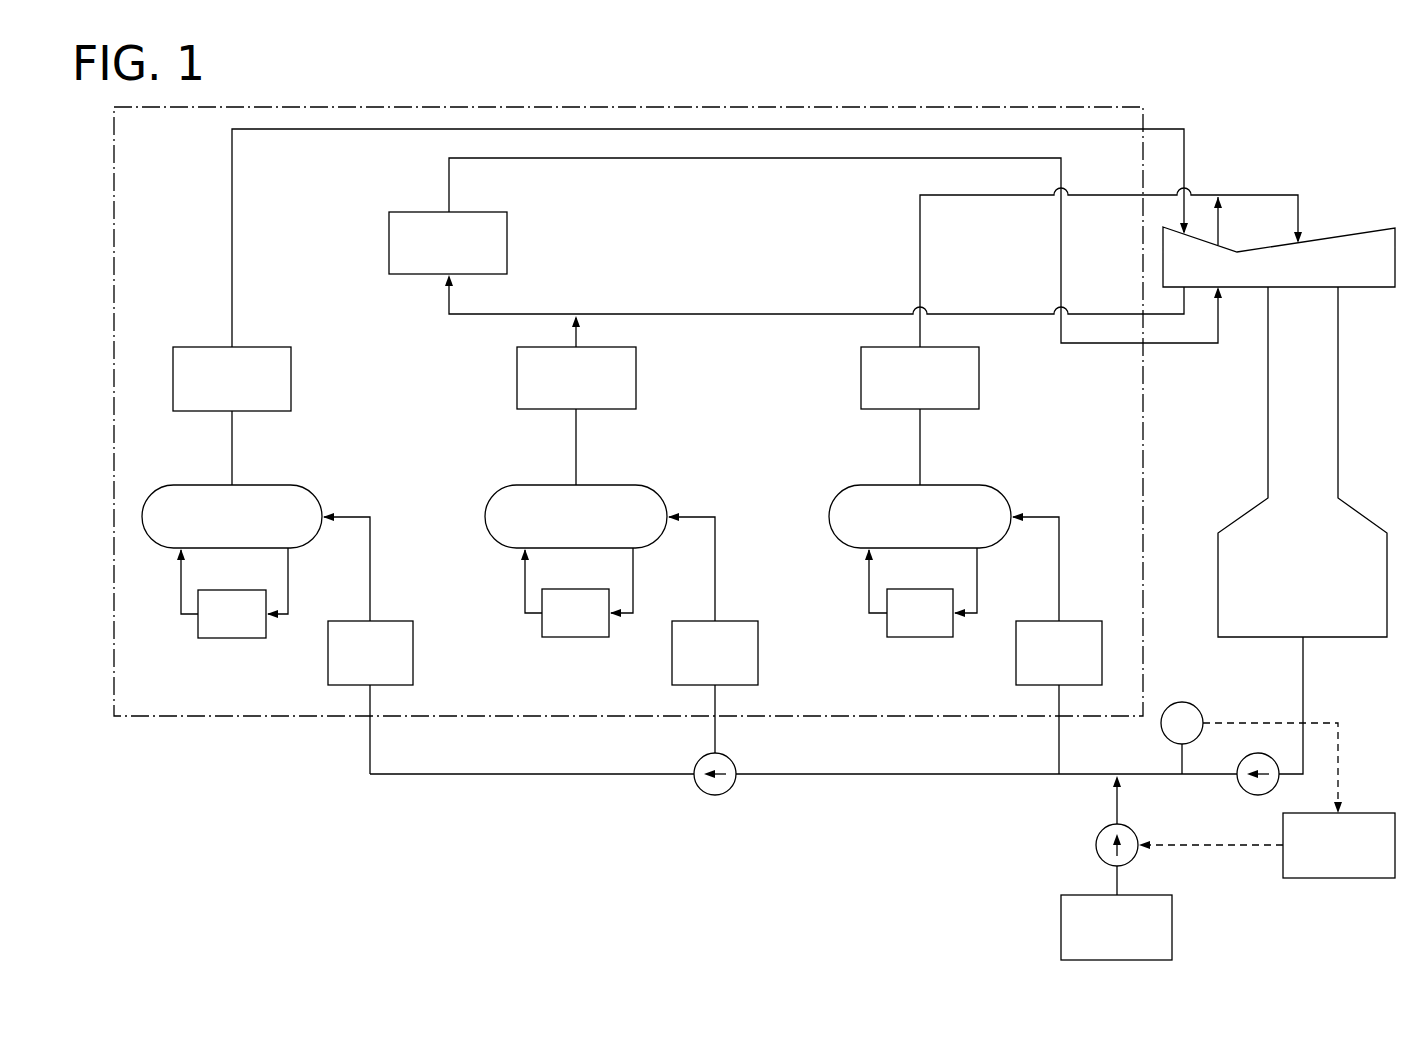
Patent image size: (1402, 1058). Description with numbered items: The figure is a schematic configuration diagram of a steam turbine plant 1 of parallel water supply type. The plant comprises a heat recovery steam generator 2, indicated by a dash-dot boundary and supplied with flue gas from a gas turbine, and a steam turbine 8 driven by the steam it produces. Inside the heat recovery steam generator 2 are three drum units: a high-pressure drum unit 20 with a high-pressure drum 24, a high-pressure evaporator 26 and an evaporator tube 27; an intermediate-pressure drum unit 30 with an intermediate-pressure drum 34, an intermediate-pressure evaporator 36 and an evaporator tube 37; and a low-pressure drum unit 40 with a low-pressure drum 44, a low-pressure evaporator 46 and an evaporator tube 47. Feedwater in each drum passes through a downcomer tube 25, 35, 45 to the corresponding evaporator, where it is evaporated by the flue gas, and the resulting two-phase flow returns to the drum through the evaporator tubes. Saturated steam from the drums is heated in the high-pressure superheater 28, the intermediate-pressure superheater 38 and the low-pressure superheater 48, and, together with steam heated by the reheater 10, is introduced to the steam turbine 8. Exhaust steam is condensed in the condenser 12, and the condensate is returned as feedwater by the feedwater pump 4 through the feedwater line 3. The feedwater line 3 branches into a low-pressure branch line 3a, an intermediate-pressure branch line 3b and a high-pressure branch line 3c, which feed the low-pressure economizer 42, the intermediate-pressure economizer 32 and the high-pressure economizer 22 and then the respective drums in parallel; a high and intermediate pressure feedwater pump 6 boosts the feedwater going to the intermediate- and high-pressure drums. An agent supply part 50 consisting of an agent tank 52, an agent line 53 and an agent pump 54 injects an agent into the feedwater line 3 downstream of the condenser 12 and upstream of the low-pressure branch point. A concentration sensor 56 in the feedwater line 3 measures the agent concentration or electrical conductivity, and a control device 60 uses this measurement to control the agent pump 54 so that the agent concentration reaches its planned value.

The steam turbine plant 1 is at (1273, 151).
The heat recovery steam generator 2 is at (201, 718).
The feedwater line 3 is at (930, 773).
The low-pressure branch line 3a is at (1059, 543).
The intermediate-pressure branch line 3b is at (715, 545).
The high-pressure branch line 3c is at (370, 545).
The feedwater pump 4 is at (1241, 787).
The high and intermediate pressure feedwater pump 6 is at (716, 796).
The steam turbine 8 is at (1358, 233).
The reheater 10 is at (507, 243).
The condenser 12 is at (1362, 515).
The high-pressure drum unit 20 is at (368, 445).
The high-pressure economizer 22 is at (392, 620).
The high-pressure drum 24 is at (320, 496).
The downcomer tube 25 is at (288, 585).
The high-pressure evaporator 26 is at (234, 640).
The evaporator tube 27 is at (181, 588).
The high-pressure superheater 28 is at (291, 379).
The intermediate-pressure drum unit 30 is at (500, 445).
The intermediate-pressure economizer 32 is at (734, 620).
The intermediate-pressure drum 34 is at (664, 496).
The downcomer tube 35 is at (633, 585).
The intermediate-pressure evaporator 36 is at (578, 640).
The evaporator tube 37 is at (525, 588).
The intermediate-pressure superheater 38 is at (636, 379).
The low-pressure drum unit 40 is at (843, 445).
The low-pressure economizer 42 is at (1082, 620).
The low-pressure drum 44 is at (1008, 496).
The downcomer tube 45 is at (977, 585).
The low-pressure evaporator 46 is at (922, 640).
The evaporator tube 47 is at (869, 588).
The low-pressure superheater 48 is at (979, 379).
The agent supply part 50 is at (998, 878).
The agent tank 52 is at (1061, 927).
The agent line 53 is at (1115, 803).
The agent pump 54 is at (1095, 845).
The concentration sensor 56 is at (1179, 702).
The control device 60 is at (1340, 880).